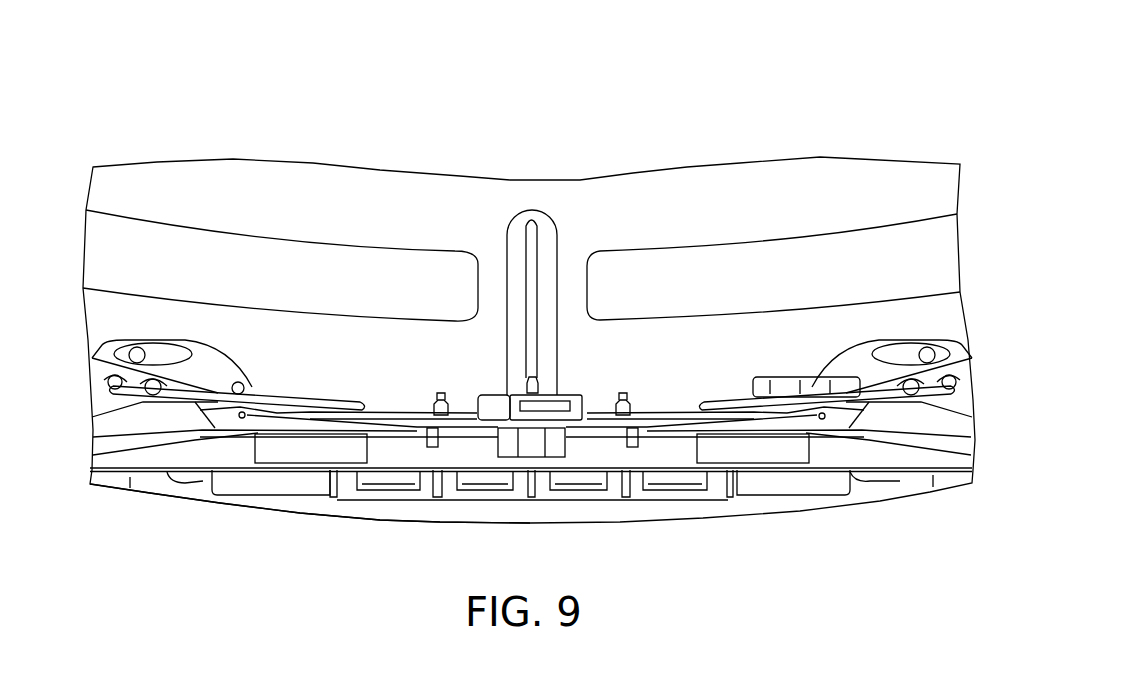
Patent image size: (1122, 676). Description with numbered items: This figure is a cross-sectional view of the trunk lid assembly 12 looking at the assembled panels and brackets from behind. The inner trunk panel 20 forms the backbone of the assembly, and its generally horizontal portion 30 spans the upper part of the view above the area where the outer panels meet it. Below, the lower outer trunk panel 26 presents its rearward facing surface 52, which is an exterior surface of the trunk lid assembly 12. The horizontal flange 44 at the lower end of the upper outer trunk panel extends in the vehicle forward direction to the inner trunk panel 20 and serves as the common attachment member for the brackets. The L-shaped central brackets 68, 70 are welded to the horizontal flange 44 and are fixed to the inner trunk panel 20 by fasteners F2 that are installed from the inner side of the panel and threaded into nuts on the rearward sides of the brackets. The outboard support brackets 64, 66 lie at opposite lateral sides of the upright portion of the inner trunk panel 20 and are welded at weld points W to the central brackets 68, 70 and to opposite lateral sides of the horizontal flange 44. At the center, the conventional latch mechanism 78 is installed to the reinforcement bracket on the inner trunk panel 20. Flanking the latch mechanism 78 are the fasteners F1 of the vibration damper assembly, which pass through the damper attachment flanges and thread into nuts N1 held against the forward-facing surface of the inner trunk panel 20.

The trunk lid assembly 12 is at (793, 72).
The inner trunk panel 20 is at (808, 195).
The horizontal portion 30 is at (695, 205).
The lower outer trunk panel 26 is at (388, 522).
The horizontal flange 44 is at (637, 487).
The rearward facing surface 52 is at (703, 518).
The support bracket 64 is at (190, 477).
The support bracket 66 is at (870, 477).
The central bracket 68 is at (203, 405).
The central bracket 70 is at (865, 390).
The latch mechanism 78 is at (547, 397).
The weld points W is at (242, 419).
The nuts N1 is at (650, 385).
The fasteners F1 is at (445, 400).
The fasteners F2 is at (813, 382).